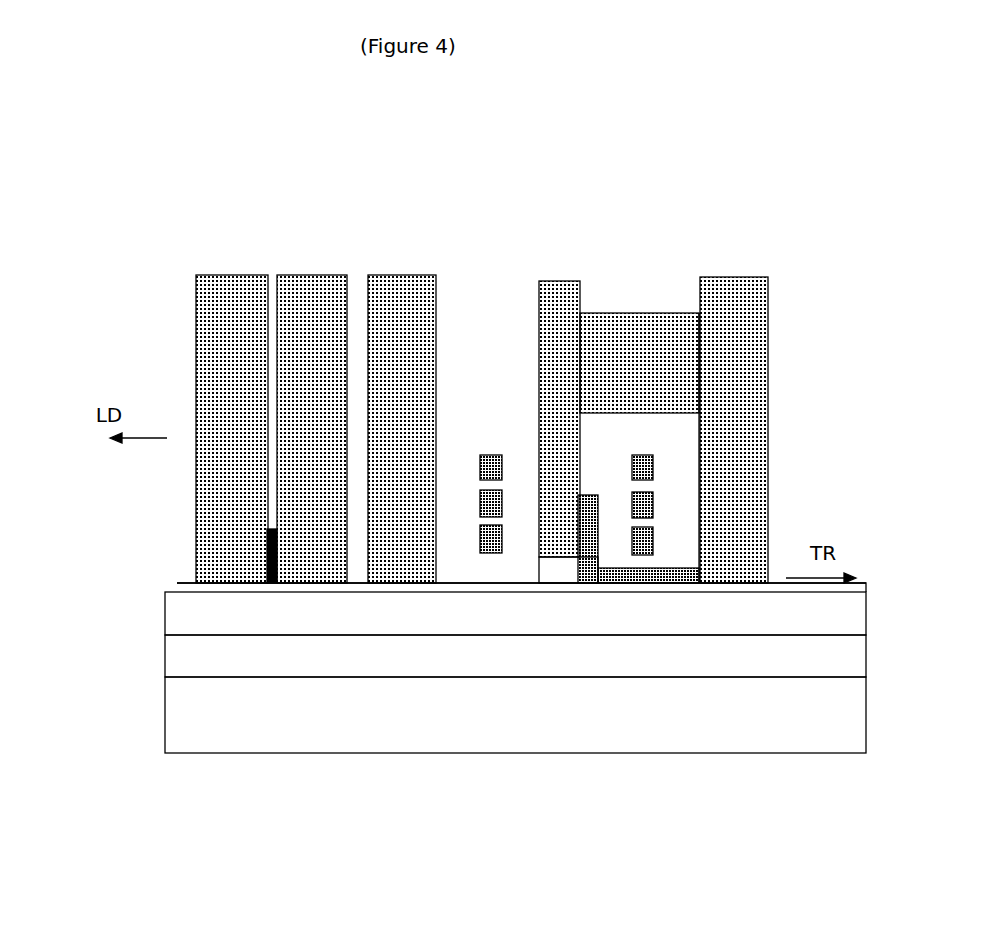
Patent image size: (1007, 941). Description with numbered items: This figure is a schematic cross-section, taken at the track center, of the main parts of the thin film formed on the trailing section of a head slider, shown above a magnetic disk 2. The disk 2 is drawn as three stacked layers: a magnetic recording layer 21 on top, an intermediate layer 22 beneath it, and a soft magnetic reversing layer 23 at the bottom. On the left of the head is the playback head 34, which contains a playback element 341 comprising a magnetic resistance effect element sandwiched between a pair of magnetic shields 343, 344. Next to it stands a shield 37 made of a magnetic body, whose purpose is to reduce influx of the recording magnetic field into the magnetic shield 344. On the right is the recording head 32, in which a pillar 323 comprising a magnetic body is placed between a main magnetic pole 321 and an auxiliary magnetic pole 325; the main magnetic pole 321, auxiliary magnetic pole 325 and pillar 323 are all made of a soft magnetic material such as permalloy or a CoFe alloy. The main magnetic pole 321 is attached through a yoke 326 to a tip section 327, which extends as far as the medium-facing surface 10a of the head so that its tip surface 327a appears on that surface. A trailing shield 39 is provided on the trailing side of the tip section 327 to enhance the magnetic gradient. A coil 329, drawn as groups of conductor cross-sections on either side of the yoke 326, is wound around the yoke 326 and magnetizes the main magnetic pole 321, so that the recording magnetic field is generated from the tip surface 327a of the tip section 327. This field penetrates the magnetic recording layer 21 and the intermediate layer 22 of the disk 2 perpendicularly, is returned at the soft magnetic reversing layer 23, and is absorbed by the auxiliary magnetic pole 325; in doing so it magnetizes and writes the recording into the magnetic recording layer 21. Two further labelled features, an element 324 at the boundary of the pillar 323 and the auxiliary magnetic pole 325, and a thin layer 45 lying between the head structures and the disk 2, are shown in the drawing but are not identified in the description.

The magnetic disk 2 is at (78, 587).
The magnetic recording layer 21 is at (165, 615).
The intermediate layer 22 is at (175, 656).
The soft magnetic reversing layer 23 is at (165, 725).
The medium-facing surface 10a is at (527, 580).
The recording head 32 is at (530, 158).
The main magnetic pole 321 is at (532, 210).
The pillar 323 is at (603, 322).
The gap layer 324 is at (688, 322).
The auxiliary magnetic pole 325 is at (725, 290).
The yoke 326 is at (570, 283).
The tip section 327 is at (578, 573).
The tip surface 327a is at (597, 583).
The coil 329 is at (493, 452).
The playback head 34 is at (347, 202).
The playback element 341 is at (267, 545).
The magnetic shield 343 is at (217, 293).
The magnetic shield 344 is at (300, 295).
The shield 37 is at (387, 287).
The trailing shield 39 is at (663, 568).
The base layer 45 is at (614, 592).